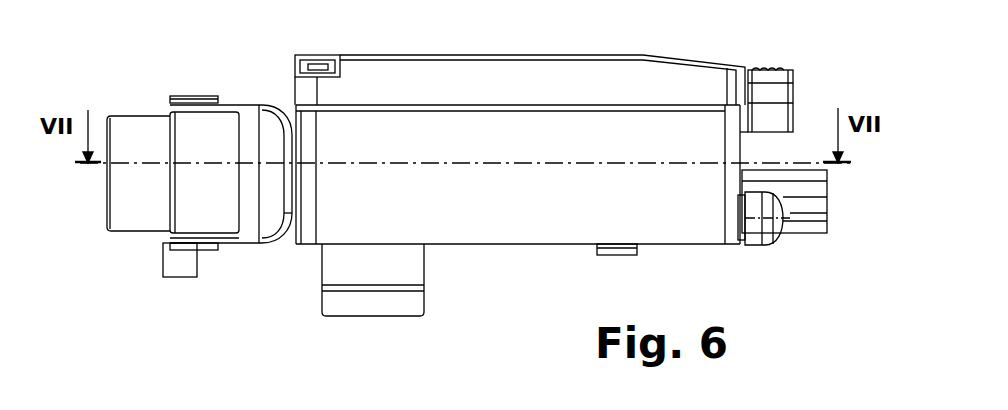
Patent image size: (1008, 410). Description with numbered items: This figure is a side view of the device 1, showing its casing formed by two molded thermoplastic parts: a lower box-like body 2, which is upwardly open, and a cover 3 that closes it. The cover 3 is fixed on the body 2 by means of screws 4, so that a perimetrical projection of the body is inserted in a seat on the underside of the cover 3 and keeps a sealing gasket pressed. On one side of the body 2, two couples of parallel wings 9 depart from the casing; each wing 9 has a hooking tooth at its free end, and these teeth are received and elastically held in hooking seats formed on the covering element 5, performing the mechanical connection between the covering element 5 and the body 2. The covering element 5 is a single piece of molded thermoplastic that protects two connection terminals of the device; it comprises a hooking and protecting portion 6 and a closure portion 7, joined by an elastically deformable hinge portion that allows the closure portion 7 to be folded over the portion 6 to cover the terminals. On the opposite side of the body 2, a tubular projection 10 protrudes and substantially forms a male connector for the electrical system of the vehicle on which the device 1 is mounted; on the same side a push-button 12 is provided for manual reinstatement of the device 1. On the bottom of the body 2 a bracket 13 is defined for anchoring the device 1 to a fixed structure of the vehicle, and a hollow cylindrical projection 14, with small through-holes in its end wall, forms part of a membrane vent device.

The device 1 is at (210, 304).
The lower box-like body 2 is at (663, 248).
The cover 3 is at (542, 50).
The screws 4 is at (326, 68).
The covering element 5 is at (166, 96).
The hooking and protecting portion 6 is at (118, 223).
The closure portion 7 is at (192, 135).
The wings 9 is at (287, 108).
The tubular projection 10 is at (822, 233).
The push-button 12 is at (762, 248).
The bracket 13 is at (412, 305).
The hollow cylindrical projection 14 is at (598, 254).